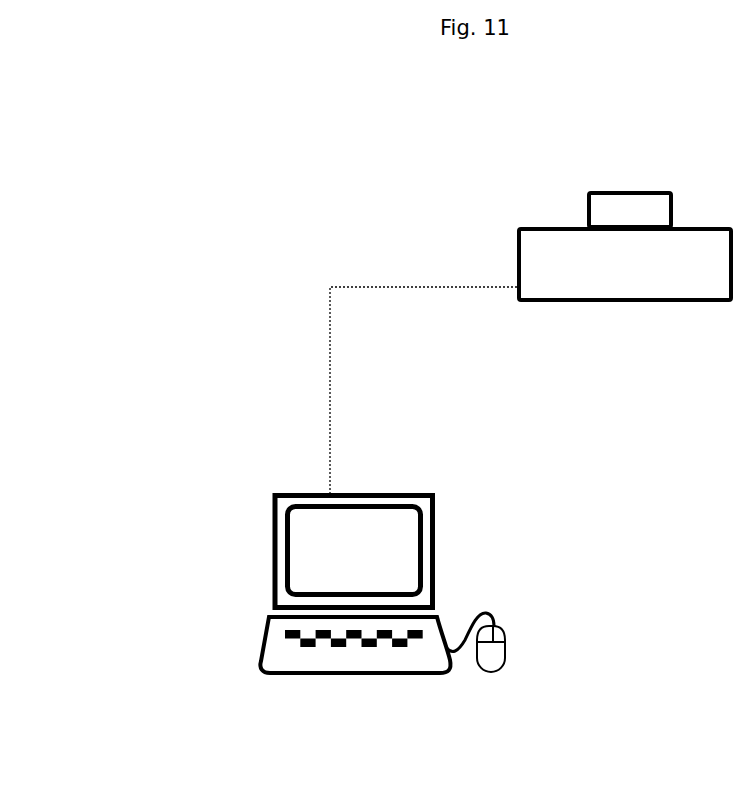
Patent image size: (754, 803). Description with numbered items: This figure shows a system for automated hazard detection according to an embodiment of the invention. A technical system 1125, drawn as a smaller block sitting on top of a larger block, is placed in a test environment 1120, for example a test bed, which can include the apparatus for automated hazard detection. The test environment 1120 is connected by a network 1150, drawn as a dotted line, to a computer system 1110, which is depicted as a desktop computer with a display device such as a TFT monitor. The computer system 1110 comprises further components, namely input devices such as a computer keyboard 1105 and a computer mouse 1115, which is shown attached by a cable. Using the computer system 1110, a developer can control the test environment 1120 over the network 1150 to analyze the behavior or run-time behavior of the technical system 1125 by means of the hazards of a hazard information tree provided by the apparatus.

The computer keyboard 1105 is at (258, 654).
The computer system 1110 is at (437, 533).
The computer mouse 1115 is at (498, 643).
The test environment 1120 is at (517, 268).
The technical system 1125 is at (587, 212).
The network 1150 is at (330, 441).